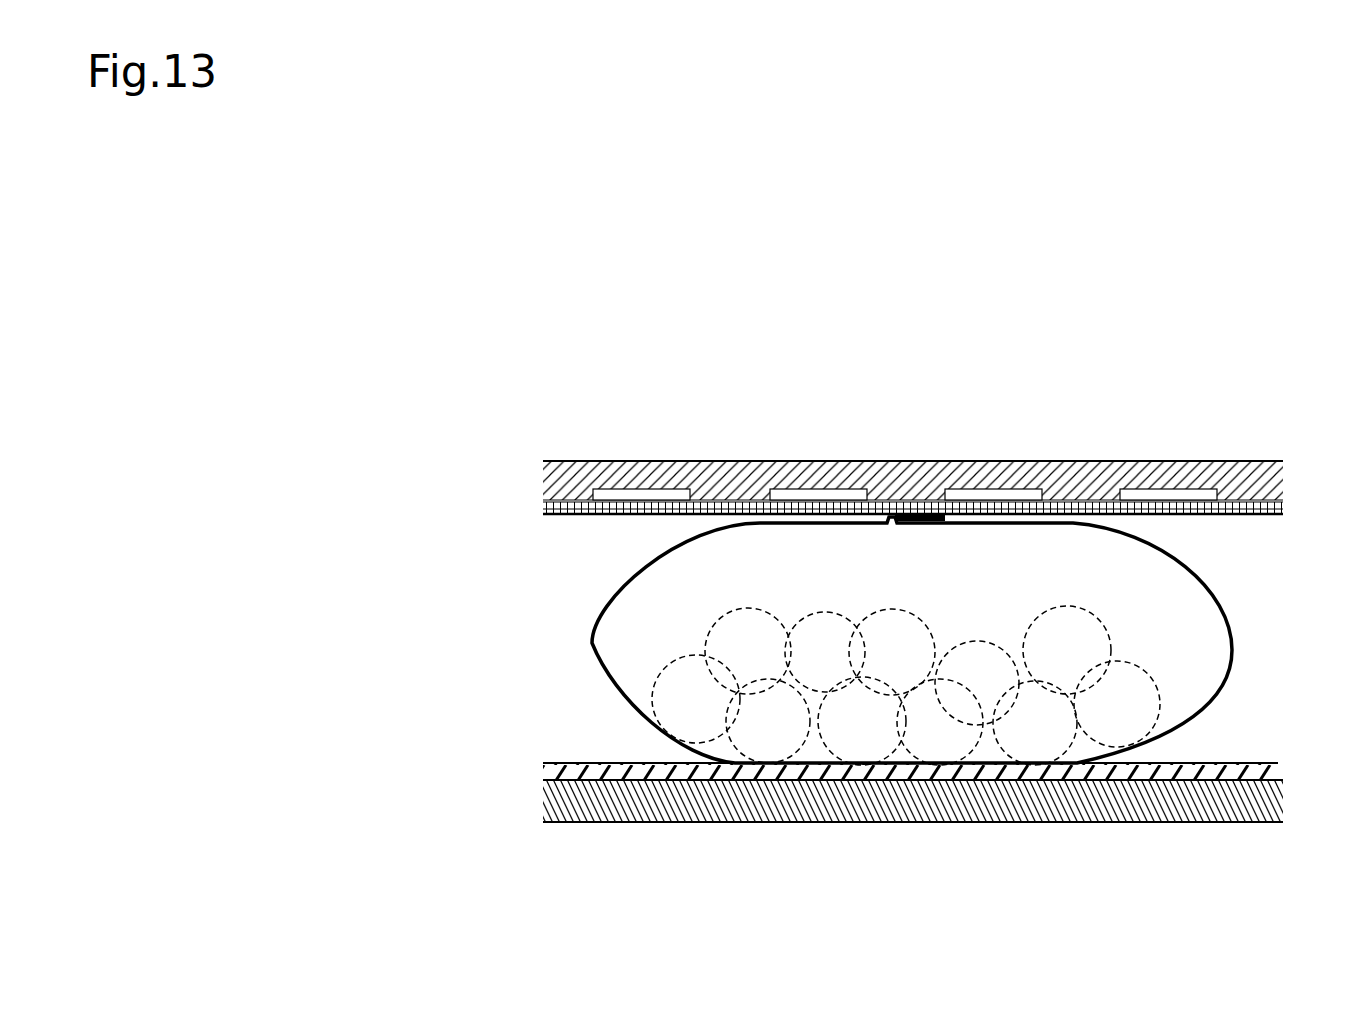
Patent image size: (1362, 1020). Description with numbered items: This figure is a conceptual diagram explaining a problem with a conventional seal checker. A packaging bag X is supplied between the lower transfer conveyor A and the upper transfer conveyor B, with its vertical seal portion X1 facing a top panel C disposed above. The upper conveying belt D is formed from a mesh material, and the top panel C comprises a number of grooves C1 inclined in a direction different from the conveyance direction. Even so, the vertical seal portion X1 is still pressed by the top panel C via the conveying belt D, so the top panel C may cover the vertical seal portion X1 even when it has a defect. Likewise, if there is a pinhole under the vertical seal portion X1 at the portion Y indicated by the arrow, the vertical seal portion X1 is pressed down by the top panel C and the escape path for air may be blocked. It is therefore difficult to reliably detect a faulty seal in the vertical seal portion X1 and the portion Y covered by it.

The lower transfer conveyor A is at (1280, 847).
The upper transfer conveyor B is at (922, 473).
The top panel C is at (560, 455).
The grooves C1 is at (630, 490).
The upper conveying belt D is at (1205, 517).
The packaging bag X is at (590, 618).
The vertical seal portion X1 is at (927, 525).
The portion covered by the vertical seal portion Y is at (896, 548).